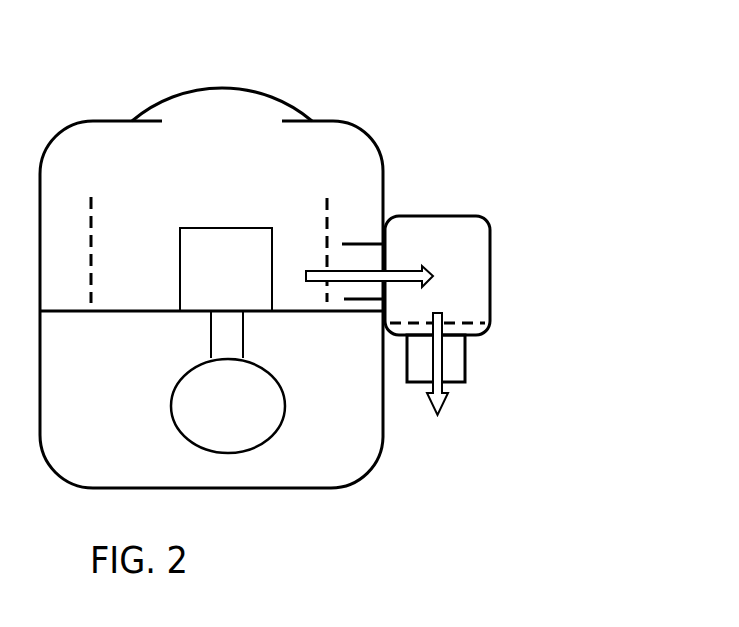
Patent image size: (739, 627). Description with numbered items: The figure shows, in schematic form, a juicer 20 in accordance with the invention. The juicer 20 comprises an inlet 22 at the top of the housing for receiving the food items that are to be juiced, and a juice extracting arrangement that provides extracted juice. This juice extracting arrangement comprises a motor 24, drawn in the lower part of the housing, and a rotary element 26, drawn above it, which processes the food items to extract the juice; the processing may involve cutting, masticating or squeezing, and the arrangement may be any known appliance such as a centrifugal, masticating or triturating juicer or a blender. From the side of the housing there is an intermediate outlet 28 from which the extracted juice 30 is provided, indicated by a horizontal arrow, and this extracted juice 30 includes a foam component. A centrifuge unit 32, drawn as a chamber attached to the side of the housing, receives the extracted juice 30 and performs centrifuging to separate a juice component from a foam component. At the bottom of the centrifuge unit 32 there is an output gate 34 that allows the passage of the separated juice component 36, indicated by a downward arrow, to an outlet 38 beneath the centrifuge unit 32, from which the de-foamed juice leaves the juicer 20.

The juicer 20 is at (437, 123).
The inlet 22 is at (258, 118).
The motor 24 is at (173, 390).
The rotary element 26 is at (180, 270).
The intermediate outlet 28 is at (363, 243).
The extracted juice 30 is at (407, 268).
The centrifuge unit 32 is at (490, 255).
The output gate 34 is at (455, 315).
The juice component 36 is at (447, 395).
The outlet 38 is at (465, 357).